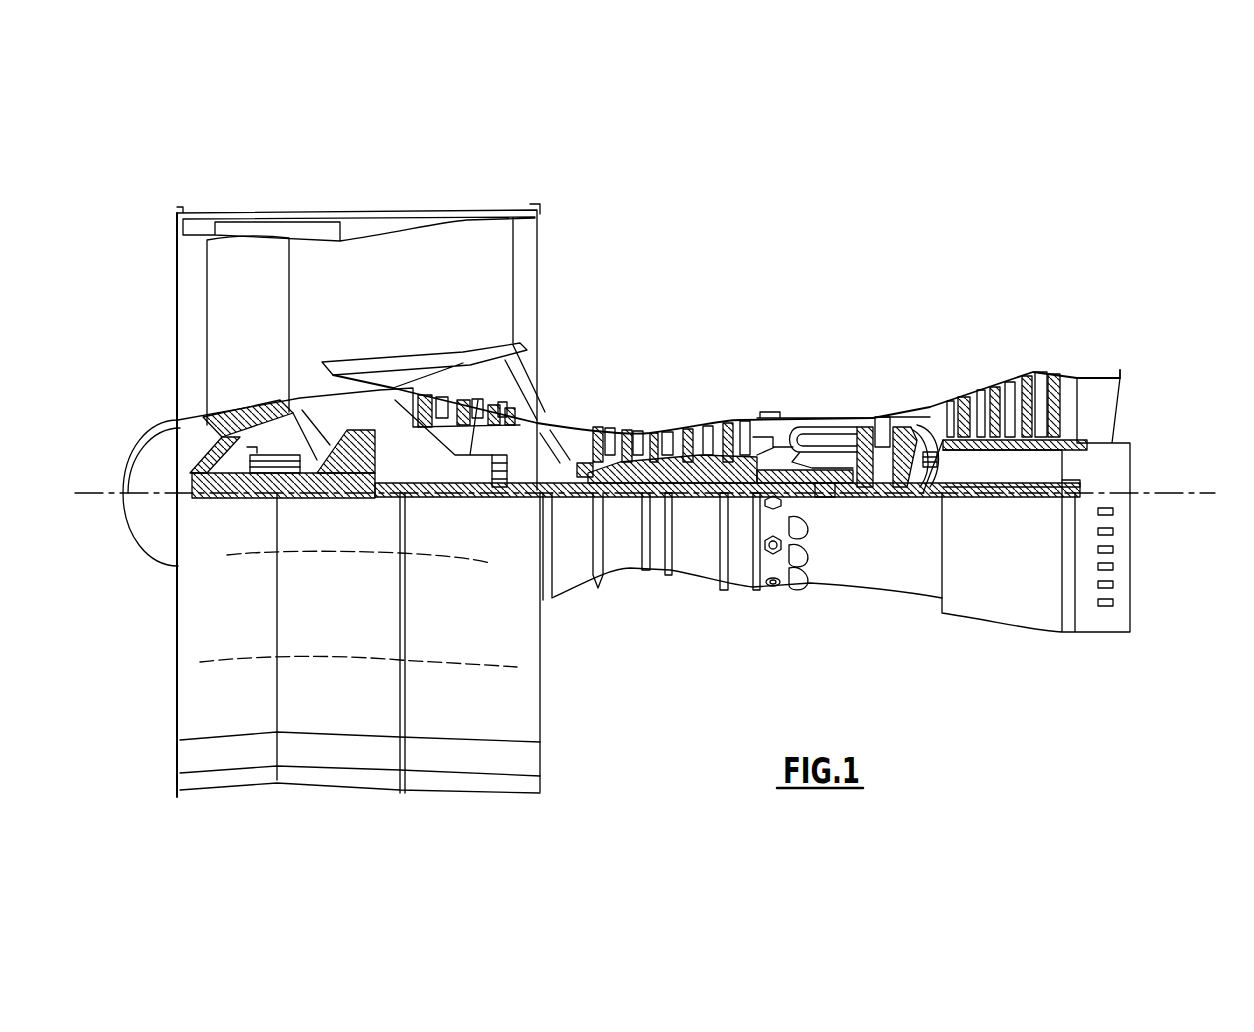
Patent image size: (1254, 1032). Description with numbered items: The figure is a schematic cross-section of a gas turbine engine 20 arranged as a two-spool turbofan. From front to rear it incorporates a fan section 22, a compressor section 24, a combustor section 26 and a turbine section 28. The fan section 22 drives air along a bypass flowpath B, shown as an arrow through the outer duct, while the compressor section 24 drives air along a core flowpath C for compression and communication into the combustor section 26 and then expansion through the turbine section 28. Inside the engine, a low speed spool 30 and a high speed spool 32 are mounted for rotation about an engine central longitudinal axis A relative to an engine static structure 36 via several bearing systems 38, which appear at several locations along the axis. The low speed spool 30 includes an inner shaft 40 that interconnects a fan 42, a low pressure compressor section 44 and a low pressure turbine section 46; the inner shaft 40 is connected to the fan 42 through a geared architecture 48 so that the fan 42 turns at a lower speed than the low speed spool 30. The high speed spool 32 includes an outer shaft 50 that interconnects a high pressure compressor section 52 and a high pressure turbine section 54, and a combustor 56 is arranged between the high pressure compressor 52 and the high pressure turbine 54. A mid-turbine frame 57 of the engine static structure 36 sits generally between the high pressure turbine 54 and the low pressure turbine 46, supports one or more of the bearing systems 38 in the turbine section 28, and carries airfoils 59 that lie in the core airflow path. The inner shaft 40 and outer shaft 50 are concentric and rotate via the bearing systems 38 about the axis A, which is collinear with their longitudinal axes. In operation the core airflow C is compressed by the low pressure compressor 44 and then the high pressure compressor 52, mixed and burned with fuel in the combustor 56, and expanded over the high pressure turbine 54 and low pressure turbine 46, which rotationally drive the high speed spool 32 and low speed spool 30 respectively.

The gas turbine engine 20 is at (820, 266).
The fan section 22 is at (290, 198).
The compressor section 24 is at (592, 398).
The combustor section 26 is at (818, 390).
The turbine section 28 is at (966, 355).
The low speed spool 30 is at (699, 505).
The high speed spool 32 is at (740, 462).
The engine static structure 36 is at (739, 592).
The bearing systems 38 is at (266, 466).
The inner shaft 40 is at (557, 500).
The fan 42 is at (262, 343).
The low pressure compressor section 44 is at (475, 400).
The low pressure turbine section 46 is at (1007, 388).
The geared architecture 48 is at (370, 477).
The outer shaft 50 is at (830, 476).
The high pressure compressor section 52 is at (673, 470).
The high pressure turbine section 54 is at (880, 420).
The combustor 56 is at (810, 440).
The mid-turbine frame 57 is at (922, 412).
The airfoils 59 is at (920, 430).
The engine central longitudinal axis A is at (1215, 492).
The bypass flowpath B is at (322, 289).
The core flowpath C is at (366, 397).